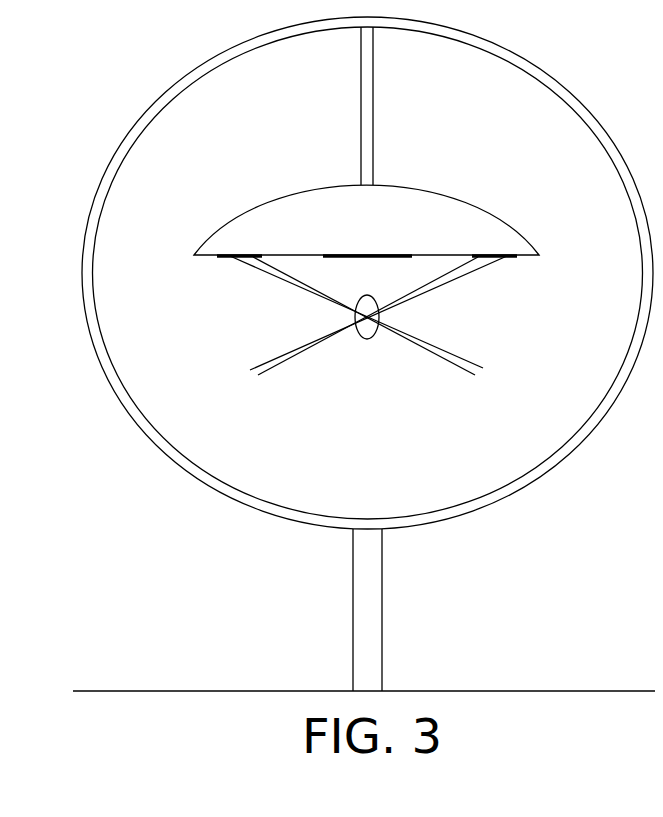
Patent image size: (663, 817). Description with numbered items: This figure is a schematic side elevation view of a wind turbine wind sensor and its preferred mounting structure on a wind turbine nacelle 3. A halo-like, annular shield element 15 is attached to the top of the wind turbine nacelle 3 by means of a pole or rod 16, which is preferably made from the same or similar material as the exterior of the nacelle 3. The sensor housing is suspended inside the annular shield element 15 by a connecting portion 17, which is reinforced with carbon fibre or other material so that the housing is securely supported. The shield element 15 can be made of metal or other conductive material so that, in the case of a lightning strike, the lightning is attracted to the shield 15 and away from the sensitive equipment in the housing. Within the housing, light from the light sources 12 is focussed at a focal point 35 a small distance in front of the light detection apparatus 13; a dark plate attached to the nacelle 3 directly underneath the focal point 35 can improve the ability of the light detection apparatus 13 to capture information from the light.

The annular shield element 15 is at (101, 200).
The connecting portion 17 is at (374, 83).
The light detection apparatus 13 is at (370, 254).
The light sources 12 is at (222, 258).
The focal point 35 is at (410, 316).
The rod 16 is at (382, 598).
The wind turbine nacelle 3 is at (231, 690).